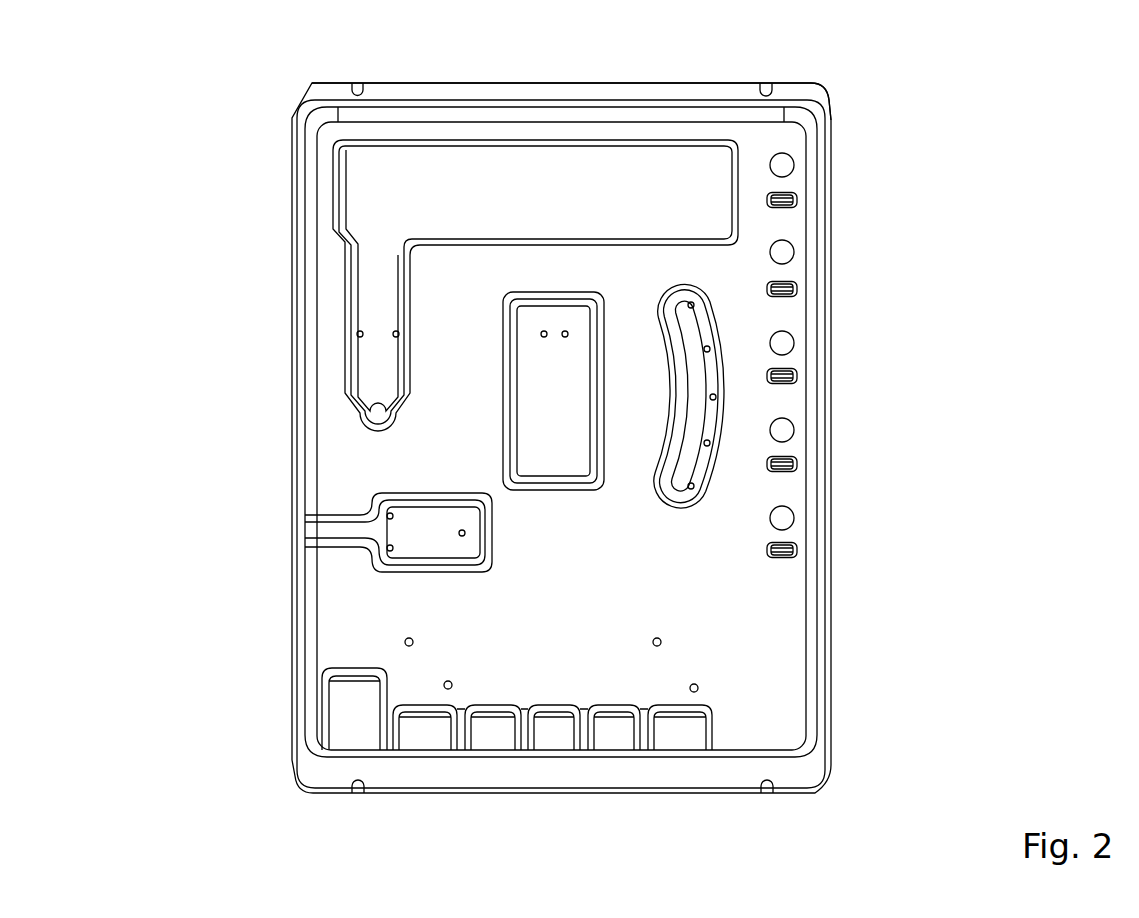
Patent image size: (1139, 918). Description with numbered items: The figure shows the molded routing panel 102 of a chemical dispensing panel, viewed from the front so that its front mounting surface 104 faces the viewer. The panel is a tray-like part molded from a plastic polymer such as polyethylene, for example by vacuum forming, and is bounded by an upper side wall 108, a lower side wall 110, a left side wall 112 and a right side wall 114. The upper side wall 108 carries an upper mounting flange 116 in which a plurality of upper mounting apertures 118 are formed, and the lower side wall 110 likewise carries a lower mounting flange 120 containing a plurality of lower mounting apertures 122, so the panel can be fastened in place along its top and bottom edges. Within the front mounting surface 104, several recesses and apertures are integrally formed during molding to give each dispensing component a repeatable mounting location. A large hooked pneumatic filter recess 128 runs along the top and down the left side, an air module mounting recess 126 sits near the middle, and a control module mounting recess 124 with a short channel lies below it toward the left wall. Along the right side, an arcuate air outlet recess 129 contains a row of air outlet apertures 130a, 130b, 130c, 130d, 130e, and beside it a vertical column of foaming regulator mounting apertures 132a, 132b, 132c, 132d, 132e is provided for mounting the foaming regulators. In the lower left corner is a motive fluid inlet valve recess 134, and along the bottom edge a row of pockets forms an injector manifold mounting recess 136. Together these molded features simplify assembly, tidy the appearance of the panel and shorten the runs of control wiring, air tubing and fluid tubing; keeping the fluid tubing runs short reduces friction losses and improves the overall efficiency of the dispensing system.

The molded routing panel 102 is at (898, 229).
The front mounting surface 104 is at (770, 647).
The upper side wall 108 is at (497, 104).
The lower side wall 110 is at (552, 786).
The left side wall 112 is at (301, 591).
The right side wall 114 is at (820, 395).
The upper mounting flange 116 is at (642, 93).
The upper mounting apertures 118 is at (356, 92).
The lower mounting flange 120 is at (587, 778).
The lower mounting apertures 122 is at (356, 786).
The air module mounting recess 124 is at (537, 402).
The control module mounting recess 126 is at (410, 522).
The pneumatic filter recess 128 is at (372, 288).
The air outlet recess 129 is at (680, 338).
The air outlet aperture 130a is at (694, 304).
The air outlet aperture 130b is at (710, 350).
The air outlet aperture 130c is at (716, 398).
The air outlet aperture 130d is at (710, 444).
The air outlet aperture 130e is at (692, 489).
The foaming regulator mounting aperture 132a is at (794, 163).
The foaming regulator mounting aperture 132b is at (794, 252).
The foaming regulator mounting aperture 132c is at (794, 342).
The foaming regulator mounting aperture 132d is at (794, 430).
The foaming regulator mounting aperture 132e is at (794, 518).
The motive fluid inlet valve recess 134 is at (337, 713).
The injector manifold mounting recess 136 is at (622, 743).